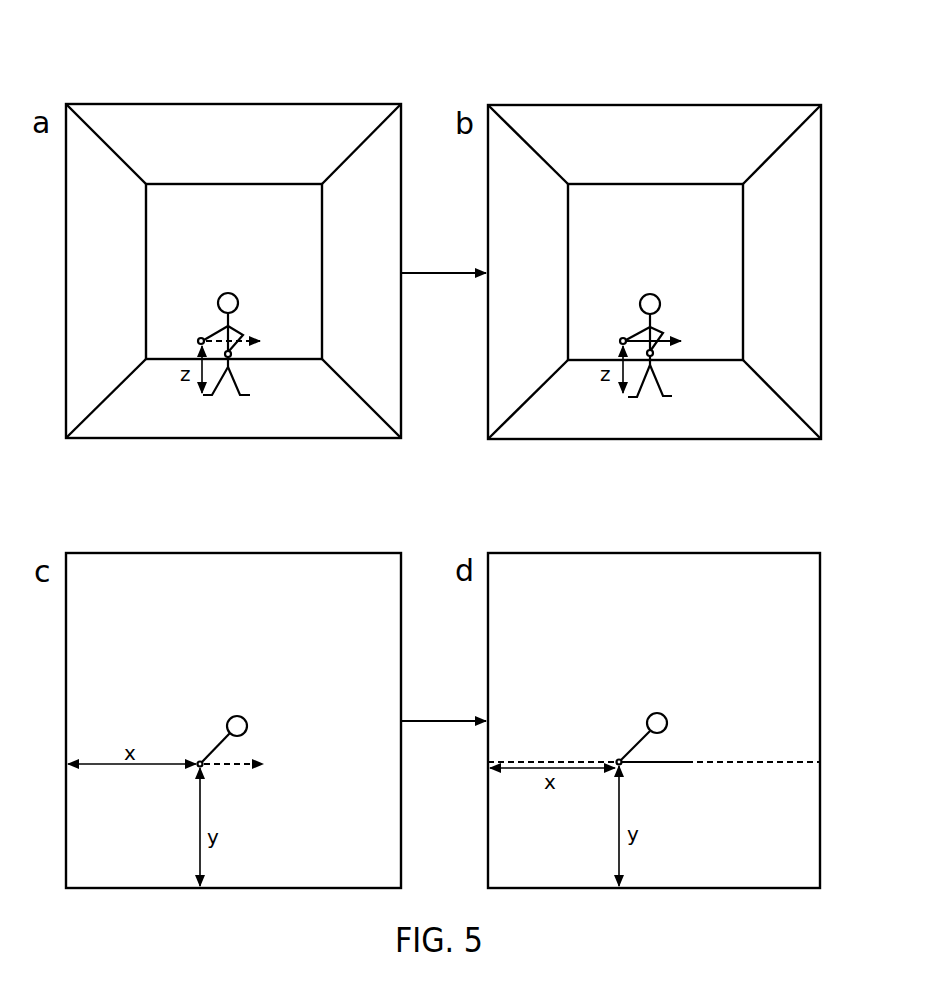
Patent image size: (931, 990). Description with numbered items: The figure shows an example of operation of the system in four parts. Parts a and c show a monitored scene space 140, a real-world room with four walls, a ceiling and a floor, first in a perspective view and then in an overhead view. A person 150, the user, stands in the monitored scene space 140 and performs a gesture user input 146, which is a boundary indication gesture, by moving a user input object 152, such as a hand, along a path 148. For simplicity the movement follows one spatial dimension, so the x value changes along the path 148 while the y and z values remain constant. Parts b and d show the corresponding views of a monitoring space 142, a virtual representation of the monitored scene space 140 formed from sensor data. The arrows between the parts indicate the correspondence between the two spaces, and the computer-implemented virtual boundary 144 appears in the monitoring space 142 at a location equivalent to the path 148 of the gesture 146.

The monitored scene space 140 is at (295, 125).
The monitoring space 142 is at (717, 123).
The computer-implemented virtual boundary 144 is at (664, 346).
The gesture user input 146 is at (248, 343).
The path 148 is at (264, 328).
The person 150 is at (233, 295).
The user input object 152 is at (198, 339).